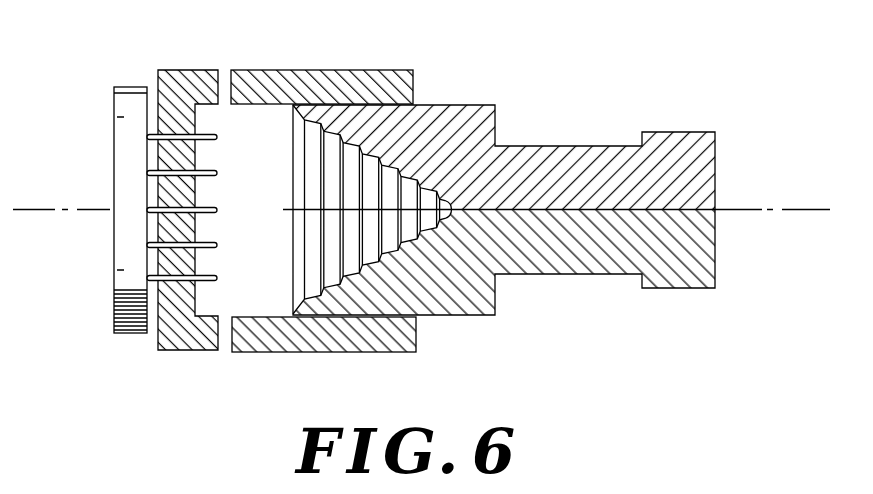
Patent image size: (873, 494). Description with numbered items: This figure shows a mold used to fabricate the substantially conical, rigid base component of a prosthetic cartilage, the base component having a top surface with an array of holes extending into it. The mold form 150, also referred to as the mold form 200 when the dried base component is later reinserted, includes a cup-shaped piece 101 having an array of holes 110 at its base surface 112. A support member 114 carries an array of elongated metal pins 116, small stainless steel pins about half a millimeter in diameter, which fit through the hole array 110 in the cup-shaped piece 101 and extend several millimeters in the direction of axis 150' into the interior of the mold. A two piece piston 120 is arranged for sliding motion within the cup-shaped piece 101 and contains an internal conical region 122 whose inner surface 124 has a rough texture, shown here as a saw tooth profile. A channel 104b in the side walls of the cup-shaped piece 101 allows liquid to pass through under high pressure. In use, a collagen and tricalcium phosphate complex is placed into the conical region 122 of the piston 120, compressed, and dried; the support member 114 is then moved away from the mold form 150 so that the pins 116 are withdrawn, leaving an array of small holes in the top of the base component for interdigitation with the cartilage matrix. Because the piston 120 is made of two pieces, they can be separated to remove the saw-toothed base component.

The piston 120 is at (510, 339).
The internal conical region 122 is at (347, 162).
The inner surface 124 is at (416, 178).
The base surface 112 is at (173, 80).
The cup-shaped piece 101 is at (297, 78).
The mold form 150 is at (324, 355).
The channel 104b is at (224, 72).
The support member 114 is at (127, 246).
The array of holes 110 is at (197, 160).
The elongated metal pins 116 is at (200, 276).
The mold form 200 is at (573, 33).
The axis 150' is at (772, 192).